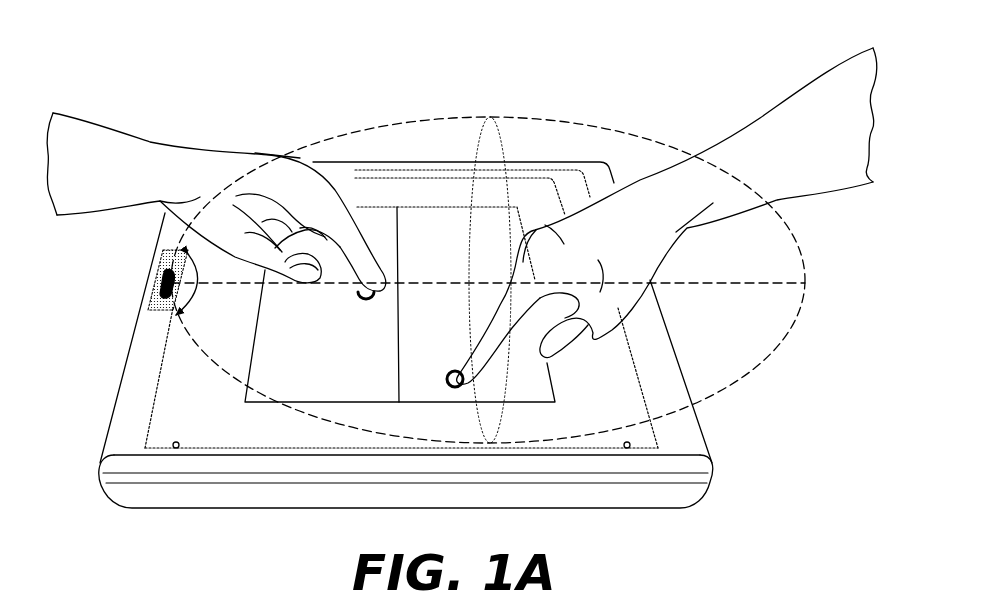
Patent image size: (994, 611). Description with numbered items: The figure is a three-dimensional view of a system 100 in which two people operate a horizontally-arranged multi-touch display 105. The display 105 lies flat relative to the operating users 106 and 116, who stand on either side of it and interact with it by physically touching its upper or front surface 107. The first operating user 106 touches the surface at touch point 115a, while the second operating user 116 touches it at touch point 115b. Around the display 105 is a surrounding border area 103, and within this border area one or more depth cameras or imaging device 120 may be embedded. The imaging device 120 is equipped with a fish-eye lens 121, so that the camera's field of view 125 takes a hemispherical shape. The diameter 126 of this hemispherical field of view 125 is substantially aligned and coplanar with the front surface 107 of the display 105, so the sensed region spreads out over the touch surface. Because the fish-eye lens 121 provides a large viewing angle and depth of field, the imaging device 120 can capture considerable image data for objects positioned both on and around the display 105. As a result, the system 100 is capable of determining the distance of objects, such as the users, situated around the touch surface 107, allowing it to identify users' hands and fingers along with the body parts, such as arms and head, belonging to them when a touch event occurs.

The system 100 is at (322, 62).
The surrounding border area 103 is at (142, 378).
The multi-touch display 105 is at (110, 432).
The operating user 106 is at (270, 142).
The front surface 107 is at (282, 318).
The touch point 115a is at (366, 298).
The touch point 115b is at (451, 372).
The operating user 116 is at (602, 323).
The imaging device 120 is at (150, 302).
The fish-eye lens 121 is at (165, 275).
The field of view 125 is at (190, 305).
The diameter 126 is at (717, 283).